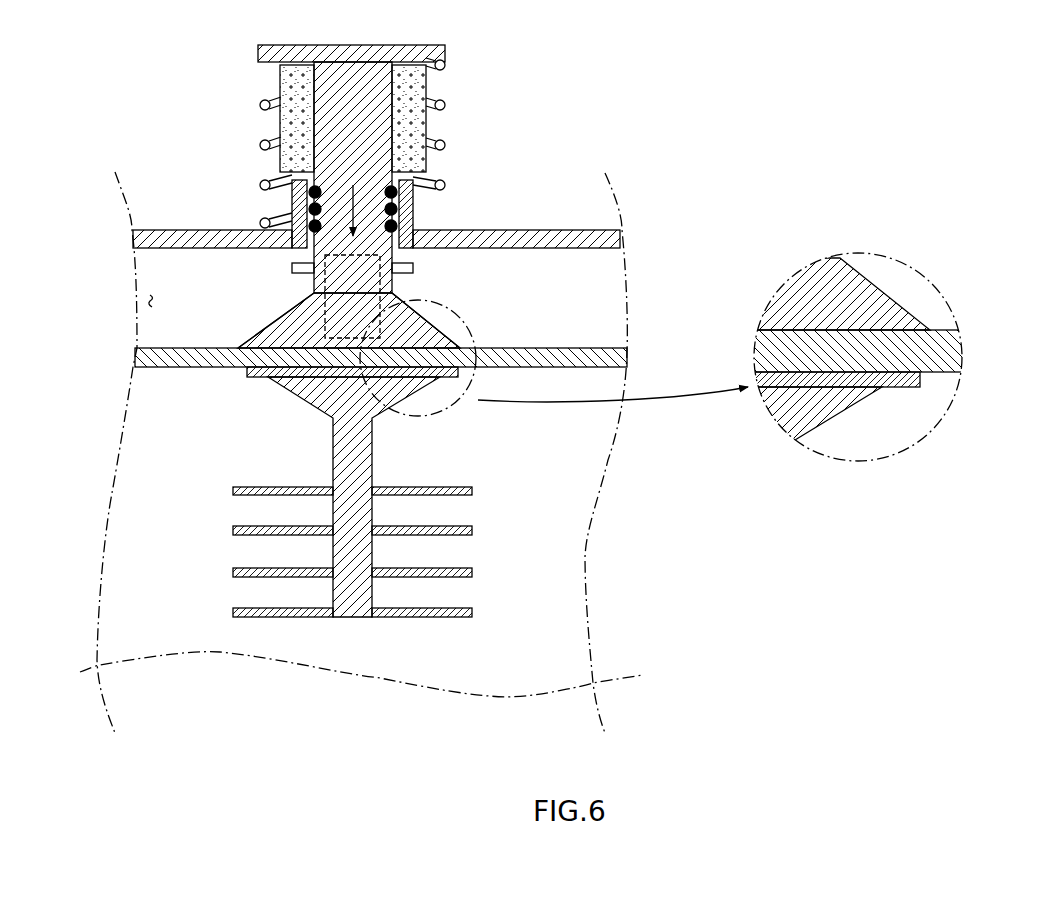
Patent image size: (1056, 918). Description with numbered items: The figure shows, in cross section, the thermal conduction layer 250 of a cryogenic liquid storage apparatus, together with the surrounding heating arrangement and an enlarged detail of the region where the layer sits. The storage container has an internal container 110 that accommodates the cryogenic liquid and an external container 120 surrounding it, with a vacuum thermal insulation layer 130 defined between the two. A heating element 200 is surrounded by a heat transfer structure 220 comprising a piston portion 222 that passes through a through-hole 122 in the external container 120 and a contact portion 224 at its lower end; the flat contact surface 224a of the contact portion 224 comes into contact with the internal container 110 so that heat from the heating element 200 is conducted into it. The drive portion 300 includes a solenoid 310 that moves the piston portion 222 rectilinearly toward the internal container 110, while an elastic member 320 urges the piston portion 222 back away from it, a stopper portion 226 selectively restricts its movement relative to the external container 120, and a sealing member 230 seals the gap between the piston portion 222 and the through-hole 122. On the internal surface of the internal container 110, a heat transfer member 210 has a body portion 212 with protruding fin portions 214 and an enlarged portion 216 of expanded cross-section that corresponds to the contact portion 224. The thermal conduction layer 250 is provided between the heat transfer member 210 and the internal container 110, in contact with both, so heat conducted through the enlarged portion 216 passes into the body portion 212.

The internal container 110 is at (136, 355).
The external container 120 is at (133, 235).
The through-hole 122 is at (305, 172).
The vacuum thermal insulation layer 130 is at (150, 300).
The heating element 200 is at (275, 320).
The heat transfer member 210 is at (245, 628).
The body portion 212 is at (352, 598).
The fin portions 214 is at (472, 572).
The enlarged portion 216 is at (250, 374).
The heat transfer structure 220 is at (315, 280).
The piston portion 222 is at (350, 80).
The contact portion 224 is at (425, 318).
The contact surface 224a is at (458, 372).
The stopper portion 226 is at (418, 262).
The sealing member 230 is at (413, 200).
The thermal conduction layer 250 is at (912, 378).
The drive portion 300 is at (438, 86).
The solenoid 310 is at (296, 78).
The elastic member 320 is at (260, 103).